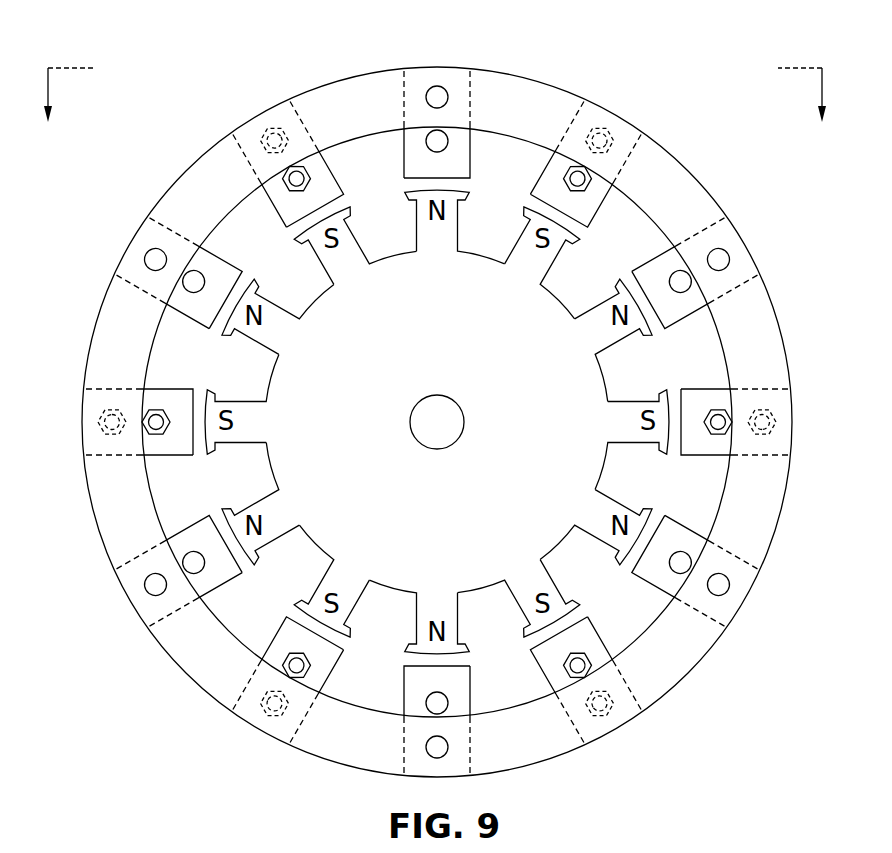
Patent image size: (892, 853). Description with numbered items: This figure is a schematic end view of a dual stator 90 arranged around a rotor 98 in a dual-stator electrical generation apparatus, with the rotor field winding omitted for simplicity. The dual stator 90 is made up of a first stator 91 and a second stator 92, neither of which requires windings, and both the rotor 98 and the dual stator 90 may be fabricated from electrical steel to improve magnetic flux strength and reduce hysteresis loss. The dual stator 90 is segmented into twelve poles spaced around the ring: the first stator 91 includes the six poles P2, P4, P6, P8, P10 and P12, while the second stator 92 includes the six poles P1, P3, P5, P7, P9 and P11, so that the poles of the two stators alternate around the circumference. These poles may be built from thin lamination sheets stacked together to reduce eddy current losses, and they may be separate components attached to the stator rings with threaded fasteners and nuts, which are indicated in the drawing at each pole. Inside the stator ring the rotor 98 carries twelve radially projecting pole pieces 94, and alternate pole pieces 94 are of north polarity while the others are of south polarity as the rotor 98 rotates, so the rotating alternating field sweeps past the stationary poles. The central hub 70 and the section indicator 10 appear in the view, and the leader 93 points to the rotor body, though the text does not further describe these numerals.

The section line 10- 10 is at (439, 109).
The shaft 70 is at (451, 433).
The dual stator 90 is at (437, 394).
The first stator 91 is at (310, 124).
The second stator 92 is at (565, 86).
The rotor 93 is at (513, 373).
The pole pieces 94 is at (642, 432).
The rotor 98 is at (451, 350).
The pole P1 is at (463, 166).
The pole P2 is at (592, 210).
The pole P3 is at (670, 320).
The pole P4 is at (693, 450).
The pole P5 is at (664, 580).
The pole P6 is at (543, 668).
The pole P7 is at (415, 687).
The pole P8 is at (290, 632).
The pole P9 is at (200, 538).
The pole P10 is at (175, 395).
The pole P11 is at (230, 277).
The pole P12 is at (315, 112).